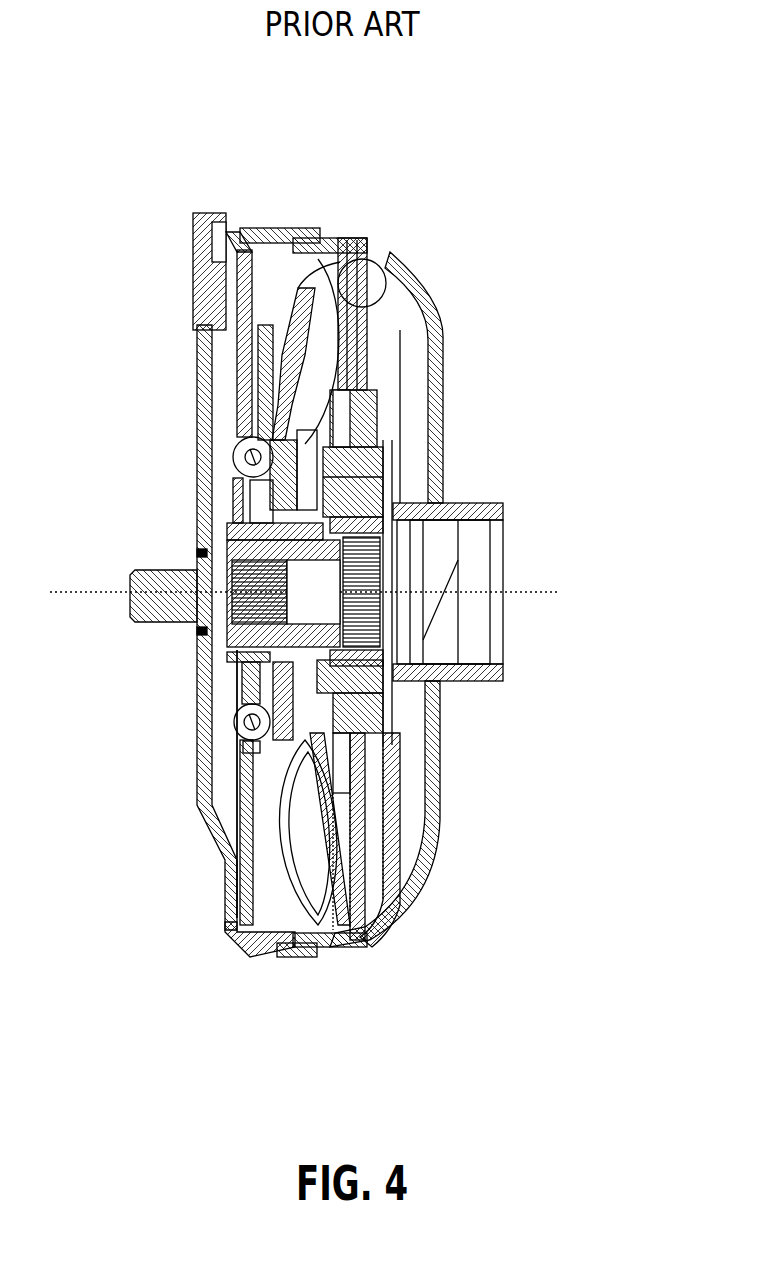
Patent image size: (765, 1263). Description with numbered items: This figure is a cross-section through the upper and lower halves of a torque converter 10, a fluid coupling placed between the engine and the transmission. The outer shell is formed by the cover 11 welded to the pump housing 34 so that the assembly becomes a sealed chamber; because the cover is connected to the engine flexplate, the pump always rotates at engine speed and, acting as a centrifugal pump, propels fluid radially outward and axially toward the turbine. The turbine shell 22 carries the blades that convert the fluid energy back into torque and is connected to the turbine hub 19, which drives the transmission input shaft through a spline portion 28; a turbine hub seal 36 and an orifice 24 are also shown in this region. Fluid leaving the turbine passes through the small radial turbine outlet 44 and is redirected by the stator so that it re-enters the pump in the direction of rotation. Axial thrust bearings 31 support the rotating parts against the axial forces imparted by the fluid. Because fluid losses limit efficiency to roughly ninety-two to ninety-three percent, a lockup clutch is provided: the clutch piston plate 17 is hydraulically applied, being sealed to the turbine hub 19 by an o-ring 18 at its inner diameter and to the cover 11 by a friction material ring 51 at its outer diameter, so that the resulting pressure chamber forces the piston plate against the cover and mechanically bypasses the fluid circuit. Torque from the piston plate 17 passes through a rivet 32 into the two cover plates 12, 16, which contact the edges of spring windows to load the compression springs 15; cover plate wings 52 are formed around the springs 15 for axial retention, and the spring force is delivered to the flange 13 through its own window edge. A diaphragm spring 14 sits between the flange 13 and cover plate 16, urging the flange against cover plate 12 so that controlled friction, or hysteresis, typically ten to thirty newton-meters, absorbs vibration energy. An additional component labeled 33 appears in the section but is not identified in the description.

The torque converter 10 is at (443, 260).
The cover 11 is at (197, 380).
The cover plate 12 is at (237, 417).
The flange 13 is at (210, 838).
The diaphragm spring 14 is at (262, 503).
The springs 15 is at (233, 725).
The cover plate 16 is at (237, 437).
The clutch piston plate 17 is at (245, 348).
The o-ring 18 is at (250, 652).
The turbine hub 19 is at (253, 632).
The turbine shell 22 is at (297, 287).
The orifice 24 is at (344, 237).
The spline portion 28 is at (397, 676).
The axial thrust bearings 31 is at (395, 505).
The rivet 32 is at (385, 250).
The outer housing wall 33 is at (400, 313).
The pump housing 34 is at (410, 267).
The turbine hub seal 36 is at (443, 548).
The turbine outlet 44 is at (340, 773).
The friction material ring 51 is at (237, 900).
The cover plate wings 52 is at (267, 745).